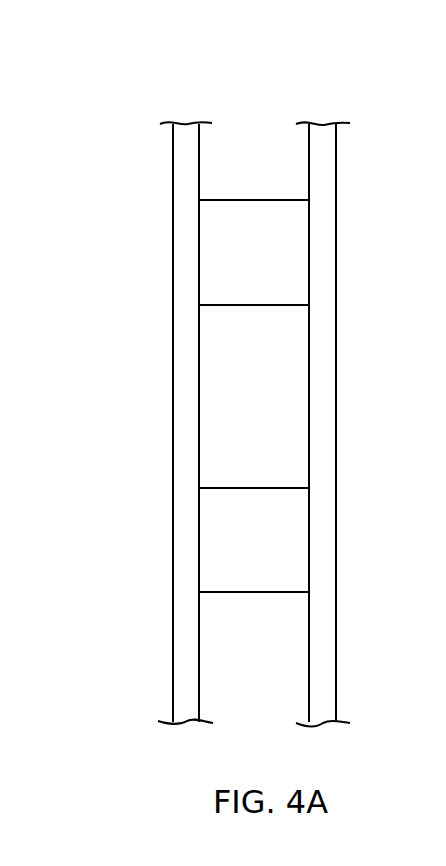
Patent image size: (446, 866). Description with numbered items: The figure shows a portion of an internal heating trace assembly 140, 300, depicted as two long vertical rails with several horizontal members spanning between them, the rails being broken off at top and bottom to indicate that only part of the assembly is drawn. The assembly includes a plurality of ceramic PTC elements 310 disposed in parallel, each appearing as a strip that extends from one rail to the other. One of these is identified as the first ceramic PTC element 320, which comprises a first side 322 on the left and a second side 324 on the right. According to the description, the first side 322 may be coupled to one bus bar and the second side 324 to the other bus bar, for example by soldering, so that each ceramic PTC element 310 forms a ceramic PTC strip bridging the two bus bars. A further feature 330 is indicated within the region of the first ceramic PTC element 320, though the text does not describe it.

The internal heating trace assembly 140 is at (125, 69).
The internal heating trace assembly 300 is at (118, 101).
The plurality of ceramic PTC elements 310 is at (207, 268).
The first ceramic PTC element 320 is at (278, 523).
The first side 322 is at (198, 566).
The second side 324 is at (311, 563).
The cell interior 330 is at (250, 514).